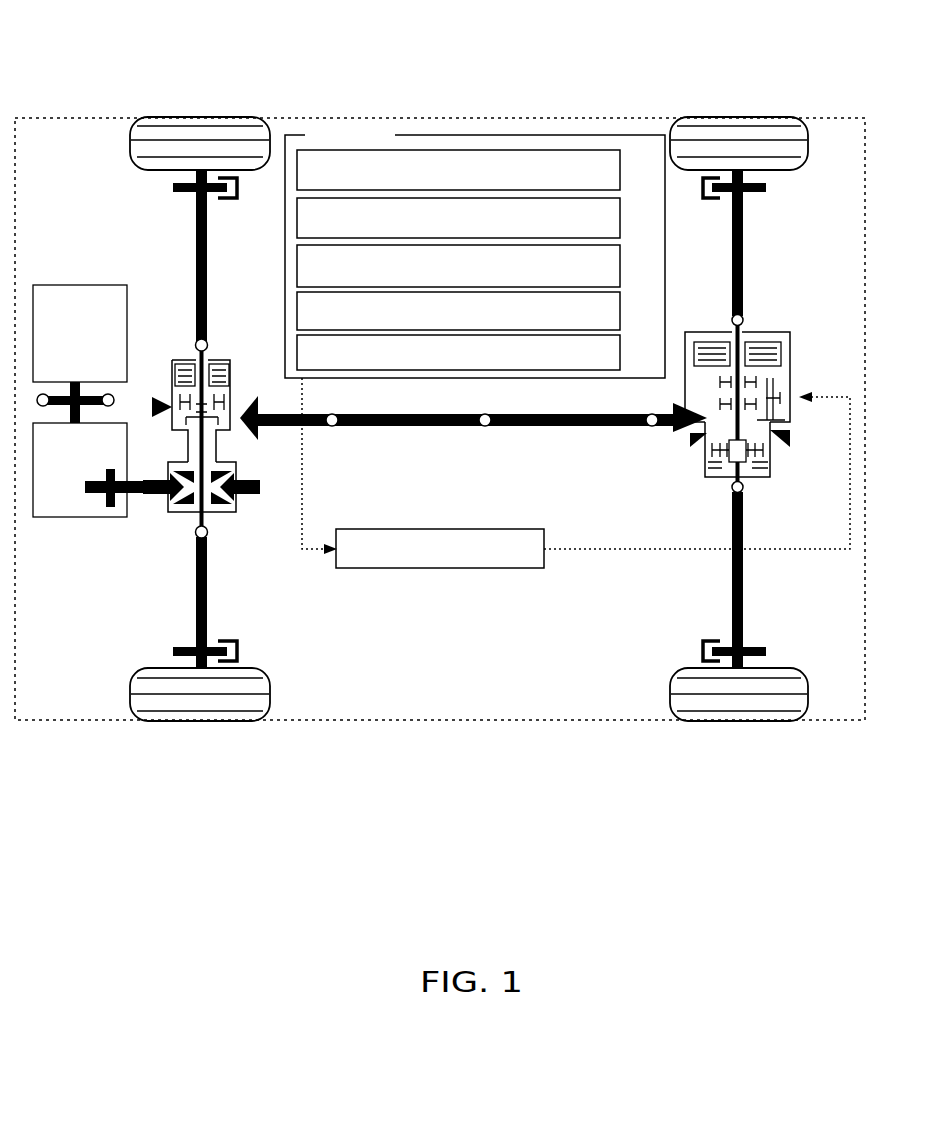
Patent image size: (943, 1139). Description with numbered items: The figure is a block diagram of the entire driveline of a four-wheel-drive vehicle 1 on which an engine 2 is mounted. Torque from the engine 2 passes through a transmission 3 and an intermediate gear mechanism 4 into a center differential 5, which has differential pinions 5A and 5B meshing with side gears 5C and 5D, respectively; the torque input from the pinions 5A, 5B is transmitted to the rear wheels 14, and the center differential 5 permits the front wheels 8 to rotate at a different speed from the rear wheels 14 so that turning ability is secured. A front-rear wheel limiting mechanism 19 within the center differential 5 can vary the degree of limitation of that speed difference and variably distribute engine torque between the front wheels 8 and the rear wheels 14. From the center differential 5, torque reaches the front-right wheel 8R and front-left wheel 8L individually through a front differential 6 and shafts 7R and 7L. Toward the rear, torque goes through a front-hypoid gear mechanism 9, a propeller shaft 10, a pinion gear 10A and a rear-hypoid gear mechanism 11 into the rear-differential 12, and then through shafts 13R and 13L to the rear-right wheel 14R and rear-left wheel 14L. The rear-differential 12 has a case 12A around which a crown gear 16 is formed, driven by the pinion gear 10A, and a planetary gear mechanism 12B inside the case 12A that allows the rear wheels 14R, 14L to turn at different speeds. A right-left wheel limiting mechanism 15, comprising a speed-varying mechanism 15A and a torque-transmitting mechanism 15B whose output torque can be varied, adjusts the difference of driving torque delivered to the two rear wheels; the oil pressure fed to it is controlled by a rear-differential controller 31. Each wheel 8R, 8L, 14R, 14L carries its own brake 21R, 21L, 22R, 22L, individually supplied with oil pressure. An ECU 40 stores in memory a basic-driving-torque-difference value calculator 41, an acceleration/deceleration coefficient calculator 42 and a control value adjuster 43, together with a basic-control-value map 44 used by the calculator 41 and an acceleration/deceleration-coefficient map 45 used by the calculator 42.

The vehicle 1 is at (100, 42).
The engine 2 is at (73, 285).
The transmission 3 is at (82, 517).
The intermediate gear mechanism 4 is at (148, 500).
The center differential 5 is at (210, 481).
The differential pinion 5A is at (180, 480).
The differential pinion 5B is at (228, 478).
The side gear 5C is at (214, 505).
The side gear 5D is at (188, 470).
The front differential 6 is at (174, 386).
The shaft 7R is at (198, 318).
The shaft 7L is at (198, 605).
The front wheels 8 is at (175, 457).
The front-right wheel 8R is at (138, 150).
The front-left wheel 8L is at (138, 698).
The front-hypoid gear mechanism 9 is at (234, 392).
The propeller shaft 10 is at (422, 428).
The pinion gear 10A is at (690, 410).
The rear-hypoid gear mechanism 11 is at (693, 455).
The rear-differential 12 is at (759, 462).
The case 12A is at (762, 470).
The planetary gear mechanism 12B is at (718, 464).
The shaft 13R is at (745, 252).
The shaft 13L is at (745, 594).
The rear wheels 14 is at (759, 449).
The rear-right wheel 14R is at (785, 163).
The rear-left wheel 14L is at (800, 692).
The right-left wheel limiting mechanism 15 is at (763, 354).
The speed-varying mechanism 15A is at (782, 384).
The torque-transmitting mechanism 15B is at (790, 342).
The crown gear 16 is at (790, 434).
The front-rear wheel limiting mechanism 19 is at (193, 394).
The brake 21R is at (226, 212).
The brake 21L is at (228, 628).
The brake 22R is at (718, 205).
The brake 22L is at (720, 632).
The rear-differential controller 31 is at (525, 562).
The ECU 40 is at (475, 251).
The basic-driving-torque-difference value calculator 41 is at (620, 175).
The acceleration/deceleration coefficient calculator 42 is at (620, 218).
The control value adjuster 43 is at (620, 260).
The basic-control-value map 44 is at (620, 301).
The acceleration/deceleration-coefficient map 45 is at (620, 345).